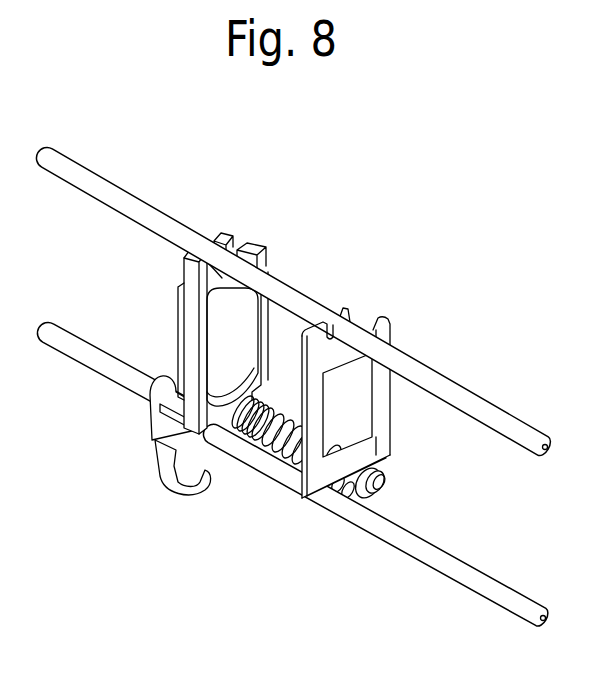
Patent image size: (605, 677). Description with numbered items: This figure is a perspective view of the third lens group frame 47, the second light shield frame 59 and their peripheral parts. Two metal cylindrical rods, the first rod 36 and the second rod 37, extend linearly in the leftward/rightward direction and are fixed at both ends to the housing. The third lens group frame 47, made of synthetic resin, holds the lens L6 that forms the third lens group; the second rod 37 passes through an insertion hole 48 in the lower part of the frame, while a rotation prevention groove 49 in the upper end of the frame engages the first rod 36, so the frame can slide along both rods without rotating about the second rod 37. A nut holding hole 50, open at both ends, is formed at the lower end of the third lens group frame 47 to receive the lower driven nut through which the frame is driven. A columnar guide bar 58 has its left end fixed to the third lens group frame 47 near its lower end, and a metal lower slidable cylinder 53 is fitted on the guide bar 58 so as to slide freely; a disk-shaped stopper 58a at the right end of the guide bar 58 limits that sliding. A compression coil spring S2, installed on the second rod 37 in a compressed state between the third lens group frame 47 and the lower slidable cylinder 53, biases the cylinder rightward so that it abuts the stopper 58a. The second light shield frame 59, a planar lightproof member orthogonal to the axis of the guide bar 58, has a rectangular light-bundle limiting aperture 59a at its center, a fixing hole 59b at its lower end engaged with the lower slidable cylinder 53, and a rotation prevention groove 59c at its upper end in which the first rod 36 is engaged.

The first rod 36 is at (512, 428).
The second rod 37 is at (80, 351).
The third lens group frame 47 is at (248, 247).
The insertion hole 48 is at (218, 446).
The rotation prevention groove 49 is at (200, 256).
The nut holding hole 50 is at (176, 466).
The lower slidable cylinder 53 is at (382, 467).
The guide bar 58 is at (293, 450).
The stopper 58a is at (380, 485).
The second light shield frame 59 is at (390, 322).
The light-bundle limiting aperture 59a is at (366, 385).
The fixing hole 59b is at (363, 500).
The rotation prevention groove 59c is at (330, 337).
The lens L6 is at (242, 330).
The compression coil spring S2 is at (278, 407).